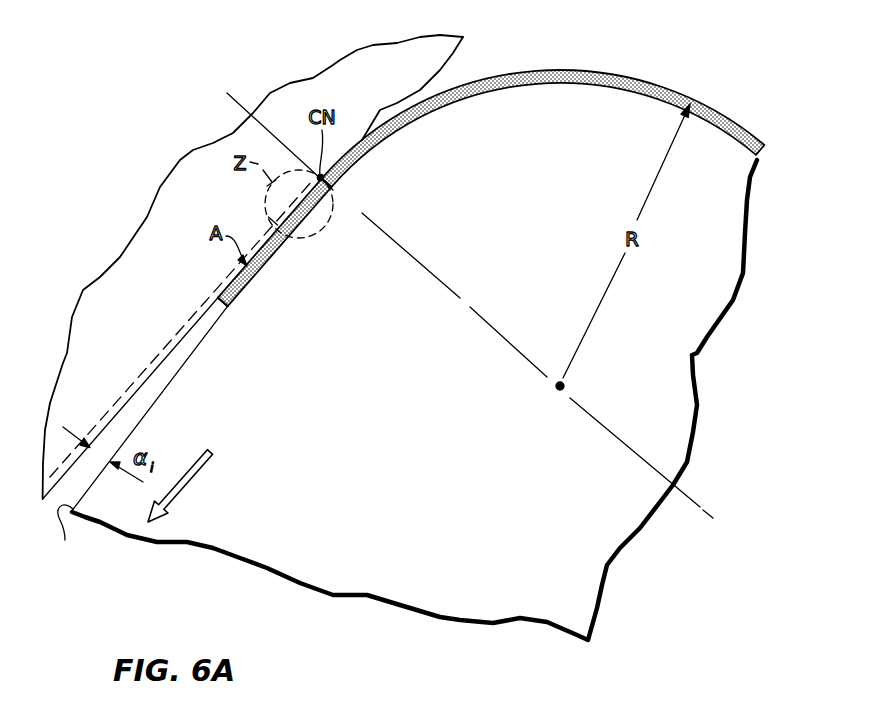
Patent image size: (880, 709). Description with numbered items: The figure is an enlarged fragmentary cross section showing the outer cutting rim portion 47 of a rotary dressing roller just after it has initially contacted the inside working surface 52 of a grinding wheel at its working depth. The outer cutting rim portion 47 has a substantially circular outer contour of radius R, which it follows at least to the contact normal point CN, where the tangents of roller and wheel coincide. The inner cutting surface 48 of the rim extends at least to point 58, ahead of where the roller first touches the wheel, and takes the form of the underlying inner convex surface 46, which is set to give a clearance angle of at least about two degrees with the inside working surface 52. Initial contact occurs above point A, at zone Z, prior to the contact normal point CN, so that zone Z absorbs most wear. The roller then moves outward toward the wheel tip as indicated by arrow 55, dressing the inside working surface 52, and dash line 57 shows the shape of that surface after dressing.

The inner convex surface 46 is at (142, 436).
The outer cutting rim portion 47 is at (665, 87).
The inner cutting surface 48 is at (262, 287).
The inside working surface 52 is at (180, 340).
The arrow 55 is at (201, 466).
The dash line 57 is at (114, 420).
The point 58 is at (232, 312).